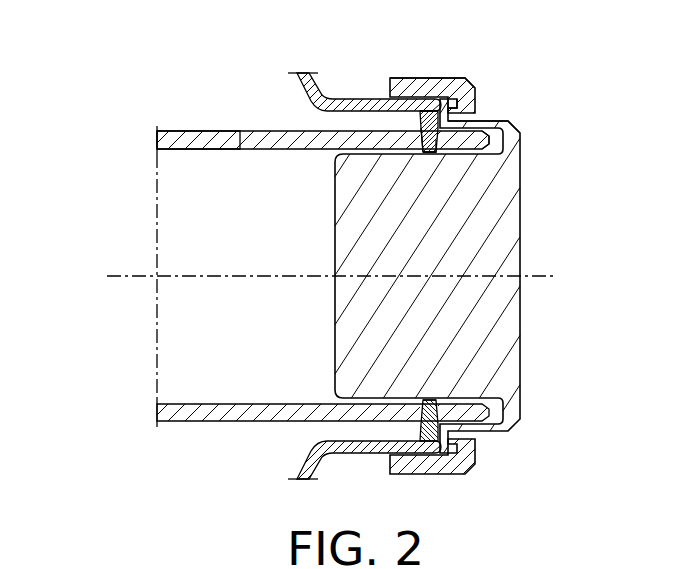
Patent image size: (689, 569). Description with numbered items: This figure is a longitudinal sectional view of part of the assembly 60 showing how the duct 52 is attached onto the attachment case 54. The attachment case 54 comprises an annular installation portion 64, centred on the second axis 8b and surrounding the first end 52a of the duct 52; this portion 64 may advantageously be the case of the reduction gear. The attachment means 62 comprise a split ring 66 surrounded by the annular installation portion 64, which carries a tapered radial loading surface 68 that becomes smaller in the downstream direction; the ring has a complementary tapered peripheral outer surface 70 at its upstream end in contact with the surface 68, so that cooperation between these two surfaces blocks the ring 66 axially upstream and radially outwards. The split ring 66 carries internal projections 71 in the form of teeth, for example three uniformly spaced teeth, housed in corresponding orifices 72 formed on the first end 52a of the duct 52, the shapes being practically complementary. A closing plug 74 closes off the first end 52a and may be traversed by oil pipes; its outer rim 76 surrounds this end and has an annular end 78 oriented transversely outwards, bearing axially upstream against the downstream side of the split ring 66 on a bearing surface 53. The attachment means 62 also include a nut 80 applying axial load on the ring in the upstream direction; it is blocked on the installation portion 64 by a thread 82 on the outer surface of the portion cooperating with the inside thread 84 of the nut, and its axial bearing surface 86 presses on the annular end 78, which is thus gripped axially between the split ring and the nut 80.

The second axis 8b is at (120, 276).
The duct 52 is at (182, 130).
The first end of the duct 52a is at (208, 142).
The bearing surface 53 is at (444, 110).
The attachment case 54 is at (297, 71).
The assembly 60 is at (95, 386).
The attachment means 62 is at (492, 60).
The annular installation portion 64 is at (369, 456).
The split ring 66 is at (419, 139).
The radial loading surface 68 is at (427, 428).
The tapered peripheral outer surface 70 is at (426, 442).
The internal projections 71 is at (430, 153).
The orifices 72 is at (436, 156).
The closing plug 74 is at (503, 345).
The outer rim 76 is at (493, 122).
The annular end 78 is at (447, 446).
The nut 80 is at (447, 74).
The thread 82 is at (412, 100).
The inside thread 84 is at (418, 109).
The axial bearing surface 86 is at (452, 104).